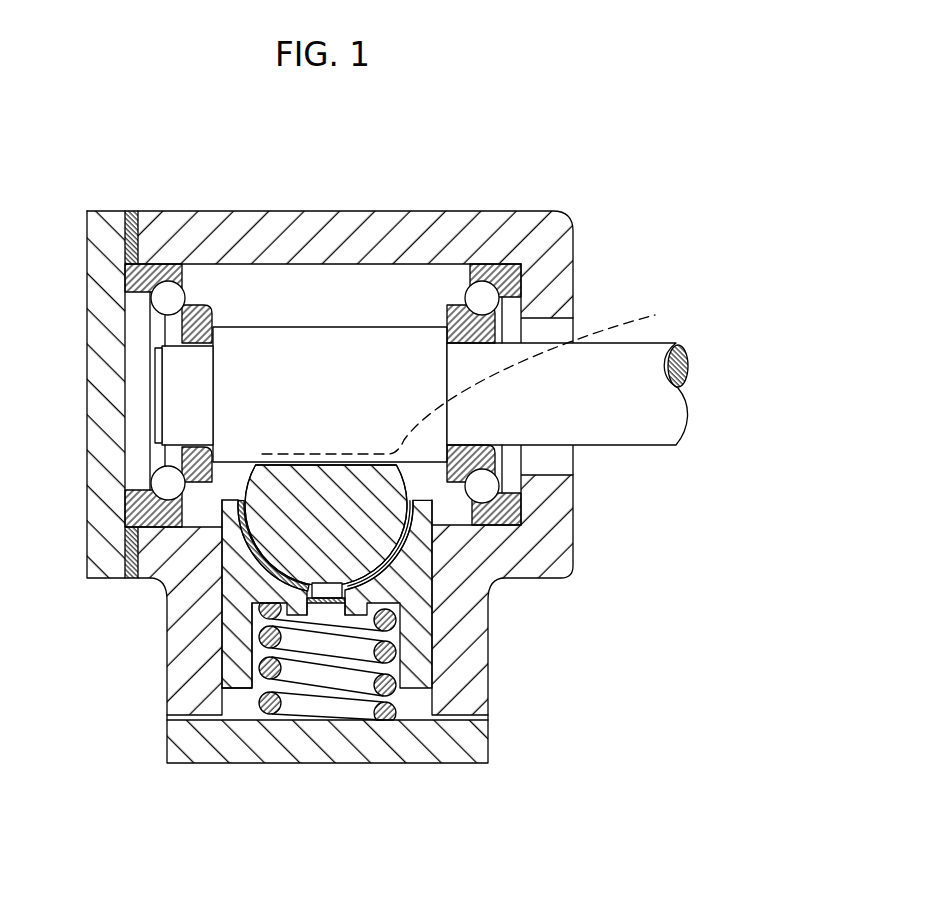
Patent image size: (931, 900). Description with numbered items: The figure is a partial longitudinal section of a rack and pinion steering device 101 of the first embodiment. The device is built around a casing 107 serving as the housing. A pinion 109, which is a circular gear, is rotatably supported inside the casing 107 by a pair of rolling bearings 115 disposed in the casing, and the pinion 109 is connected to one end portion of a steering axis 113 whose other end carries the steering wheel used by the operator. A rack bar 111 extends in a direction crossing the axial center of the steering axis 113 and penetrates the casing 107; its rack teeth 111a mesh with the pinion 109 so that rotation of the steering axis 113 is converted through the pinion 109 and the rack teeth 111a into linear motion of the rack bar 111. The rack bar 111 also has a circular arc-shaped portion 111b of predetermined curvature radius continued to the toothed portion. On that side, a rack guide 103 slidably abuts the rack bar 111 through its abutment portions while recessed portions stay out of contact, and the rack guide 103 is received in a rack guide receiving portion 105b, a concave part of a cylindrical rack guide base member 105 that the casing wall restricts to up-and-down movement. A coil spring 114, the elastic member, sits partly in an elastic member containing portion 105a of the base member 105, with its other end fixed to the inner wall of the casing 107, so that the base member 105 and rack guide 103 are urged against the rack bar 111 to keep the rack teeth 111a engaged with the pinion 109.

The rack and pinion steering device 101 is at (604, 193).
The rack guide 103 is at (400, 545).
The rack guide base member 105 is at (413, 642).
The elastic member containing portion 105a is at (262, 688).
The rack guide receiving portion 105b is at (273, 547).
The casing 107 is at (566, 258).
The pinion 109 is at (330, 365).
The rack bar 111 is at (362, 527).
The rack teeth 111a is at (472, 361).
The circular arc-shaped portion 111b is at (320, 588).
The steering axis 113 is at (645, 420).
The coil spring 114 is at (350, 682).
The rolling bearings 115 is at (205, 283).